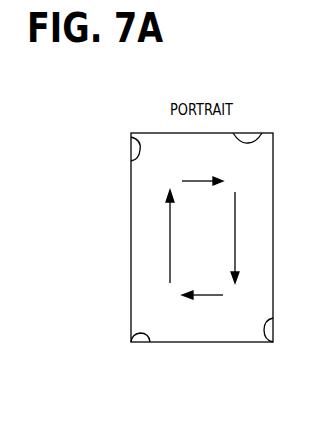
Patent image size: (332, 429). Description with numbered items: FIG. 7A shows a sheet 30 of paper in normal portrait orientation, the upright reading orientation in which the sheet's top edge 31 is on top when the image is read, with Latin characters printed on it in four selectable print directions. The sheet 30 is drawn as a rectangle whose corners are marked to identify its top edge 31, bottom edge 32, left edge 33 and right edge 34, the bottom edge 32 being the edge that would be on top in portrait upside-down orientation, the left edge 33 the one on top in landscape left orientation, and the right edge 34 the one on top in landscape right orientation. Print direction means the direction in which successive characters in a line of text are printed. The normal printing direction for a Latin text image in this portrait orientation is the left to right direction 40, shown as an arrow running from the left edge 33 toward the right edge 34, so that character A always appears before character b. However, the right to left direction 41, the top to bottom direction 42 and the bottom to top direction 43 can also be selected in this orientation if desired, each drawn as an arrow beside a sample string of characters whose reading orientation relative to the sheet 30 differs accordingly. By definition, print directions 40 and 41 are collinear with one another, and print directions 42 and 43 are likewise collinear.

The sheet 30 is at (157, 157).
The top edge 31 is at (259, 133).
The bottom edge 32 is at (131, 342).
The left edge 33 is at (132, 140).
The right edge 34 is at (266, 343).
The left to right printing direction 40 is at (198, 183).
The right to left direction 41 is at (203, 292).
The top to bottom direction 42 is at (232, 232).
The bottom to top direction 43 is at (170, 243).